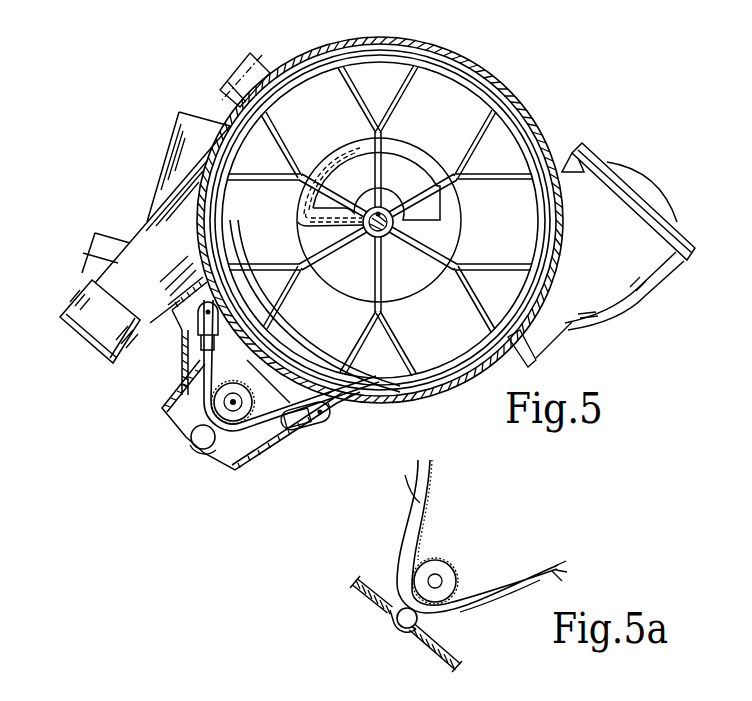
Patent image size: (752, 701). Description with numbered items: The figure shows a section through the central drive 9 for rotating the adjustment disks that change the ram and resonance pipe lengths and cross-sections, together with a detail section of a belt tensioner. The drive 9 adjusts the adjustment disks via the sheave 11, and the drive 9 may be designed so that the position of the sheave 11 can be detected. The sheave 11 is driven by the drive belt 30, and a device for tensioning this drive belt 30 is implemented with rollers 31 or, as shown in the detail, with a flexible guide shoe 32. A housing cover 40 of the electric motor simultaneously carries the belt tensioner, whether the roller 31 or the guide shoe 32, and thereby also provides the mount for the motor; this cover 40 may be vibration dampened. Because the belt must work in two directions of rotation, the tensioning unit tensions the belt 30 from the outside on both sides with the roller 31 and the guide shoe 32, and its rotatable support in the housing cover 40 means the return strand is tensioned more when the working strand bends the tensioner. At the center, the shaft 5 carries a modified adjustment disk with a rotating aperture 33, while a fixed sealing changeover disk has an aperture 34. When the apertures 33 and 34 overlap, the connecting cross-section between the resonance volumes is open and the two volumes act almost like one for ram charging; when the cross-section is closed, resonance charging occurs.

In FIG. 5, the drive 9 is at (555, 108).
In FIG. 5, the shaft 5 is at (384, 236).
In FIG. 5, the rotating aperture 33 is at (403, 176).
In FIG. 5, the aperture 34 is at (308, 212).
In FIG. 5, the sheave 11 is at (287, 338).
In FIG. 5, the drive belt 30 is at (329, 390).
In FIG. 5a, the drive belt 30 is at (522, 568).
In FIG. 5, the roller 31 is at (199, 330).
In FIG. 5, the housing cover 40 is at (186, 430).
In FIG. 5a, the flexible guide shoe 32 is at (499, 598).